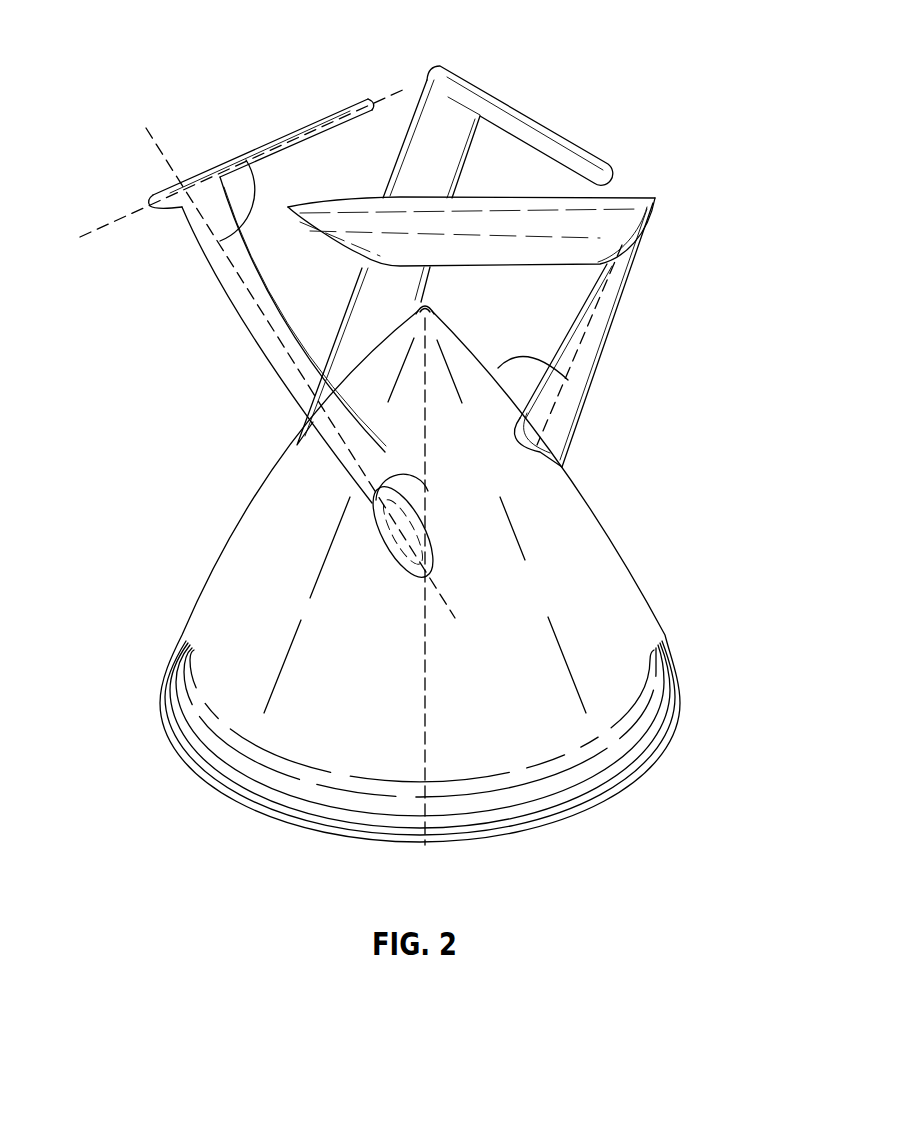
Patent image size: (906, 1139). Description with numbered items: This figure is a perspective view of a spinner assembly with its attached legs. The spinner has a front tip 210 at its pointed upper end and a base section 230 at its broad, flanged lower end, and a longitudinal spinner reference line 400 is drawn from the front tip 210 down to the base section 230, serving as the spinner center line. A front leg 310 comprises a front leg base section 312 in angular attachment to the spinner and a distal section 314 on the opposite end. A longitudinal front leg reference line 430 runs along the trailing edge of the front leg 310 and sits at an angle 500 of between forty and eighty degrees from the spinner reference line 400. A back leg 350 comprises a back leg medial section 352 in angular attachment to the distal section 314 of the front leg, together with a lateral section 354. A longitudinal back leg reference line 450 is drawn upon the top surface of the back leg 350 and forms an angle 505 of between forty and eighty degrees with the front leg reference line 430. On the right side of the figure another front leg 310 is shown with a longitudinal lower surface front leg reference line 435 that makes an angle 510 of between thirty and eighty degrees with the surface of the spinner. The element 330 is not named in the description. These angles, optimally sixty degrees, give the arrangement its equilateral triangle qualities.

The front tip 210 is at (431, 311).
The base section 230 is at (678, 613).
The front leg 310 is at (270, 352).
The front leg base section 312 is at (395, 572).
The distal section 314 is at (168, 219).
The blade 330 is at (658, 178).
The back leg 350 is at (544, 125).
The back leg medial section 352 is at (137, 221).
The lateral section 354 is at (369, 82).
The longitudinal spinner reference line 400 is at (427, 703).
The longitudinal front leg reference line 430 is at (165, 150).
The longitudinal lower surface front leg reference line 435 is at (578, 361).
The longitudinal back leg reference line 450 is at (106, 224).
The angle 500 is at (402, 460).
The angle 505 is at (262, 198).
The angle 510 is at (526, 356).